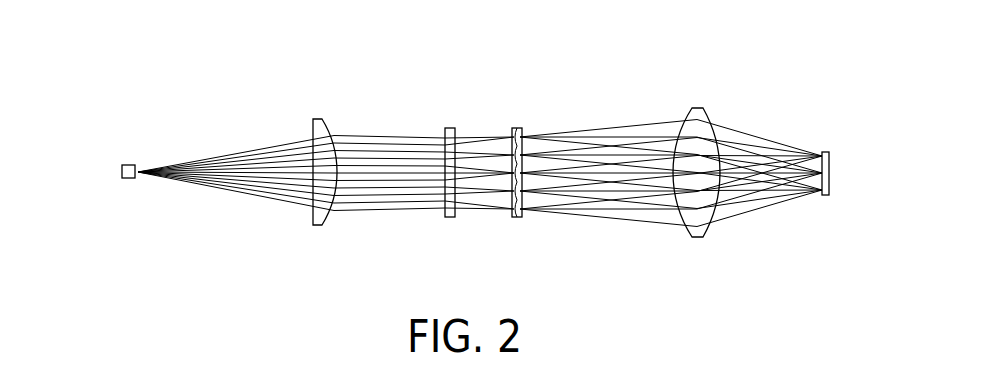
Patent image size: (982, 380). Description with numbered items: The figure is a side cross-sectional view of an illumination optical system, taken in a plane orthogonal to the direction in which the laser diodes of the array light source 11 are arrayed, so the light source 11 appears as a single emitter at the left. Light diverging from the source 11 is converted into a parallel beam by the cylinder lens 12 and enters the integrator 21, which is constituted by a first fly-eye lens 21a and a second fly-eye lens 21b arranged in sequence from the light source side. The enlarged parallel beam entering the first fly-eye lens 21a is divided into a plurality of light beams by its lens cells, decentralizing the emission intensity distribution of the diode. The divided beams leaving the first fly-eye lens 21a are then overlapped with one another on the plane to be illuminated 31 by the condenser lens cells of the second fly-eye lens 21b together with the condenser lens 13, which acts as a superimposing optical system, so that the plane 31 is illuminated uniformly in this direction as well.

The array light source 11 is at (122, 170).
The cylinder lens 12 is at (336, 116).
The integrator 21 is at (543, 88).
The first fly-eye lens 21a is at (450, 158).
The second fly-eye lens 21b is at (519, 158).
The condenser lens 13 is at (697, 108).
The plane to be illuminated 31 is at (829, 151).